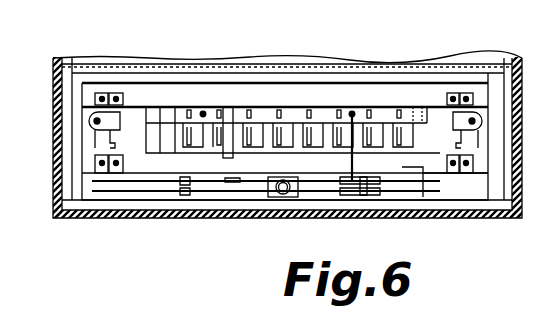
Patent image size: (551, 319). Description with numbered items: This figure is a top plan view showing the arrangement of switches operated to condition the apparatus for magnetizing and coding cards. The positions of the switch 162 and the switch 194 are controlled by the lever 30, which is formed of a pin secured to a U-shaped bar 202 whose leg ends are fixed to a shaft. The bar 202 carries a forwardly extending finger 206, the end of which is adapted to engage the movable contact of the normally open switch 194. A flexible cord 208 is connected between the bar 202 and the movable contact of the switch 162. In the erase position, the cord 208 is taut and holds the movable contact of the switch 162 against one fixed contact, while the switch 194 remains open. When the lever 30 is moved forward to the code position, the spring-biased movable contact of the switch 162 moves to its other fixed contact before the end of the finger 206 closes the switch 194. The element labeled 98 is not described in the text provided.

The lever 30 is at (204, 112).
The finger 206 is at (234, 108).
The U-shaped bar 202 is at (322, 108).
The bracket 98 is at (90, 122).
The switch 194 is at (205, 190).
The flexible cord 208 is at (350, 163).
The switch 162 is at (349, 199).